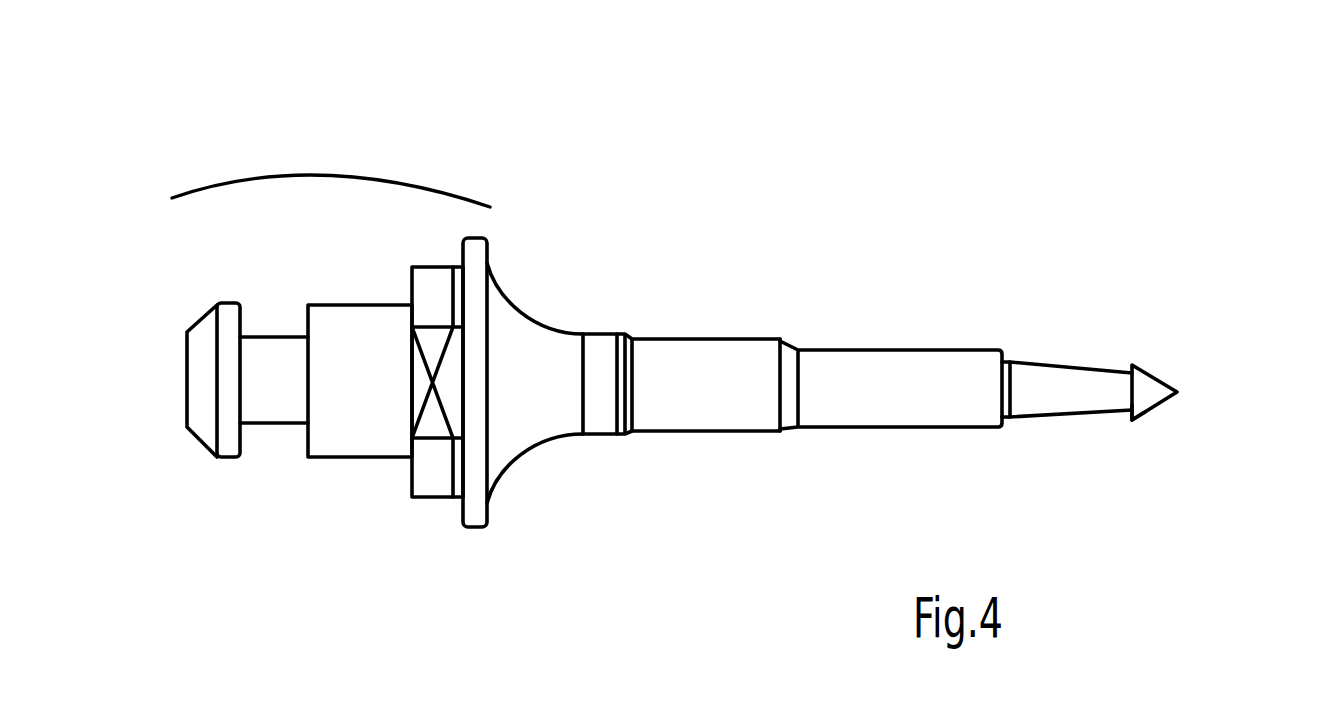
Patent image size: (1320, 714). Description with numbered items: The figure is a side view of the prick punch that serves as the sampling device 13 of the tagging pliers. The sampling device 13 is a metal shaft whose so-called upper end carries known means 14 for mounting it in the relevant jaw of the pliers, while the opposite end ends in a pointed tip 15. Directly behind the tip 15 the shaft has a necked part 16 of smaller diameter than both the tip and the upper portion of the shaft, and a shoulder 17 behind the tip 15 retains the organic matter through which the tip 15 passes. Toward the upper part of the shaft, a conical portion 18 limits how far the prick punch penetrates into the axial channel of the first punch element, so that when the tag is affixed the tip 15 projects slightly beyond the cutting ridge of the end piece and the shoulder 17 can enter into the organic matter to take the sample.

The sampling device 13 is at (767, 288).
The means for mounting 14 is at (323, 176).
The tip 15 is at (1152, 373).
The necked part 16 is at (1065, 402).
The shoulder 17 is at (1128, 414).
The conical portion 18 is at (540, 448).